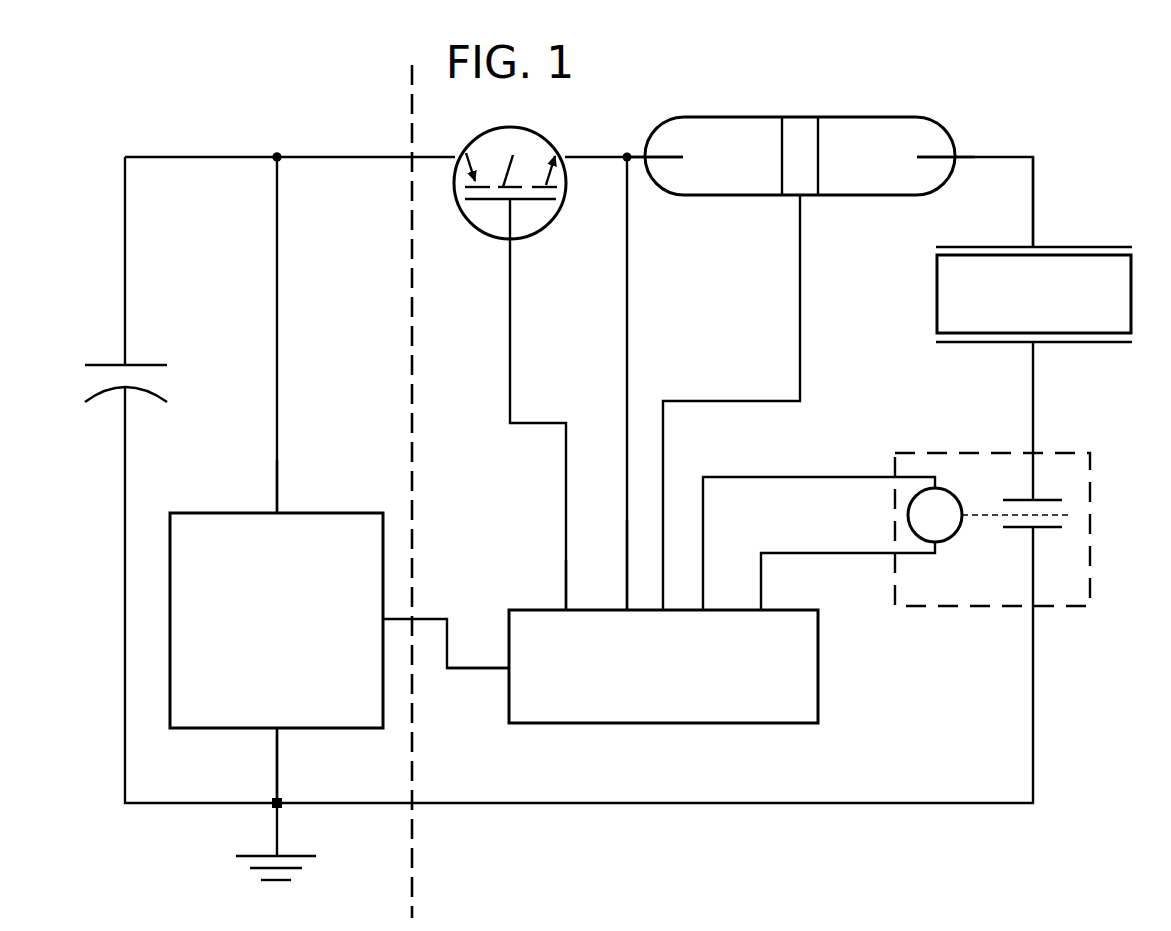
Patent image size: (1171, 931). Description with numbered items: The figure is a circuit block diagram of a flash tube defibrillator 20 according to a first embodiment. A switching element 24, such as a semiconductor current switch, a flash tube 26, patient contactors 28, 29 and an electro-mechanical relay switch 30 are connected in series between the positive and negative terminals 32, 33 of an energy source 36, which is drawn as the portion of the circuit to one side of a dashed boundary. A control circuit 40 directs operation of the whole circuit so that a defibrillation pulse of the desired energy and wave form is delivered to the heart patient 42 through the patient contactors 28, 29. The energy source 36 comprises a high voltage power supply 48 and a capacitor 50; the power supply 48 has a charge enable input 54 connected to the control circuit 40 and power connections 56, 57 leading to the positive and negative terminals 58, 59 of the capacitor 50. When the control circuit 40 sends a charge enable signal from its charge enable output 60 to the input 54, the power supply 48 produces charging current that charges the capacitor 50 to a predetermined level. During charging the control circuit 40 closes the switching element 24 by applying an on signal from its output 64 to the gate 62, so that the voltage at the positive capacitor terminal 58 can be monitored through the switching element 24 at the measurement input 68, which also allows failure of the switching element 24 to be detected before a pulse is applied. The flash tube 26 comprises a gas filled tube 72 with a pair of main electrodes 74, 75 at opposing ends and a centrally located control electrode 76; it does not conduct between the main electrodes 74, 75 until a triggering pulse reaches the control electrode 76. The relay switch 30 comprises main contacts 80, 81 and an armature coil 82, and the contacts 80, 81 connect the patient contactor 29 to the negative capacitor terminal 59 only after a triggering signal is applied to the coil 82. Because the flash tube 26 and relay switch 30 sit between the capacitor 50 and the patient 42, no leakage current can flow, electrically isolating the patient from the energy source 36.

The defibrillator 20 is at (1028, 116).
The switching element 24 is at (560, 212).
The flash tube 26 is at (796, 165).
The patient contactor 28 is at (1013, 246).
The patient contactor 29 is at (1013, 343).
The electro-mechanical relay switch 30 is at (905, 530).
The positive terminal 32 is at (279, 156).
The negative terminal 33 is at (281, 802).
The energy source 36 is at (399, 351).
The control circuit 40 is at (565, 724).
The heart patient 42 is at (1000, 294).
The high voltage power supply 48 is at (318, 512).
The capacitor 50 is at (163, 367).
The charge enable input 54 is at (410, 619).
The power connection 56 is at (277, 512).
The power connection 57 is at (277, 742).
The positive terminal of the capacitor 58 is at (141, 362).
The negative terminal of the capacitor 59 is at (141, 393).
The charge enable output 60 is at (508, 668).
The gate 62 is at (509, 248).
The output 64 is at (565, 608).
The measurement input 68 is at (623, 608).
The gas filled tube 72 is at (727, 117).
The main electrode 74 is at (663, 150).
The main electrode 75 is at (937, 150).
The control electrode 76 is at (808, 198).
The main contact 80 is at (1040, 494).
The main contact 81 is at (1022, 530).
The armature coil 82 is at (953, 491).